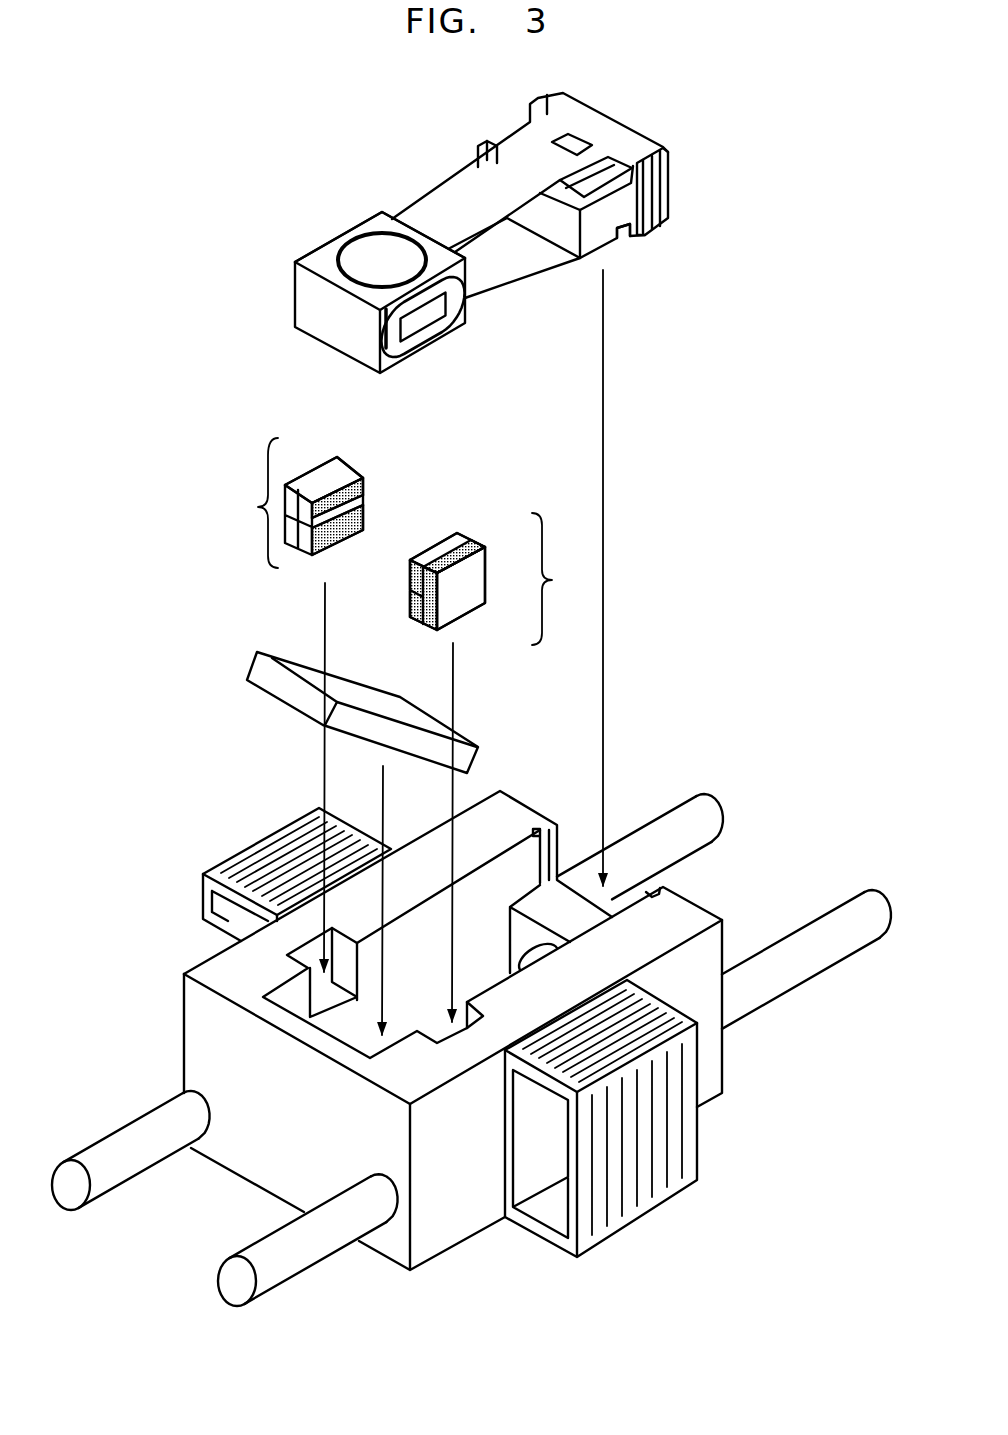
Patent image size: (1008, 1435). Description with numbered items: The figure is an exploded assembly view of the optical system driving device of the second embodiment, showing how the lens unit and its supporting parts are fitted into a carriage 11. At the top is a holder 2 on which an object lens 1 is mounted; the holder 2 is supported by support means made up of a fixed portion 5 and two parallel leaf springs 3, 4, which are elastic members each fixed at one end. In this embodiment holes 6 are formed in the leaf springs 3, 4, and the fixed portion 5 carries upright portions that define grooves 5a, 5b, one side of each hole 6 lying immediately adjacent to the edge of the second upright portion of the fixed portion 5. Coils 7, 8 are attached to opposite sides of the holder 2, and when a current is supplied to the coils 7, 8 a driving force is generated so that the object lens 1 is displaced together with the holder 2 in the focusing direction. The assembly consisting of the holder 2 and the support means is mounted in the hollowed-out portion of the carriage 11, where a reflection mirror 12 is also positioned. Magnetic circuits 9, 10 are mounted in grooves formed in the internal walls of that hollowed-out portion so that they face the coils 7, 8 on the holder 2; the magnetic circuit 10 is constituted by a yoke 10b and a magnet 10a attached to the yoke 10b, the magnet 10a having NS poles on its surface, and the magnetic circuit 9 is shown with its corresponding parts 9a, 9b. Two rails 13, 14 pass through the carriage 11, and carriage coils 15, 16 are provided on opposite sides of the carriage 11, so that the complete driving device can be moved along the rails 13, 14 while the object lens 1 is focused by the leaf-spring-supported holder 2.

The object lens 1 is at (381, 252).
The holder 2 is at (328, 320).
The leaf spring 3 is at (463, 197).
The leaf spring 4 is at (522, 276).
The fixed portion 5 is at (668, 190).
The groove 5a is at (600, 181).
The groove 5b is at (613, 243).
The hole 6 is at (577, 137).
The coil 7 is at (432, 345).
The coil 8 is at (307, 241).
The magnetic circuit 9 is at (496, 579).
The photodetector top portion 9a is at (460, 536).
The photodetector front portion 9b is at (464, 596).
The magnetic circuit 10 is at (283, 503).
The magnet 10a is at (353, 499).
The yoke 10b is at (314, 467).
The carriage 11 is at (216, 1052).
The reflection mirror 12 is at (250, 677).
The rail 13 is at (293, 1258).
The rail 14 is at (67, 1186).
The carriage coil 15 is at (675, 1163).
The carriage coil 16 is at (226, 841).